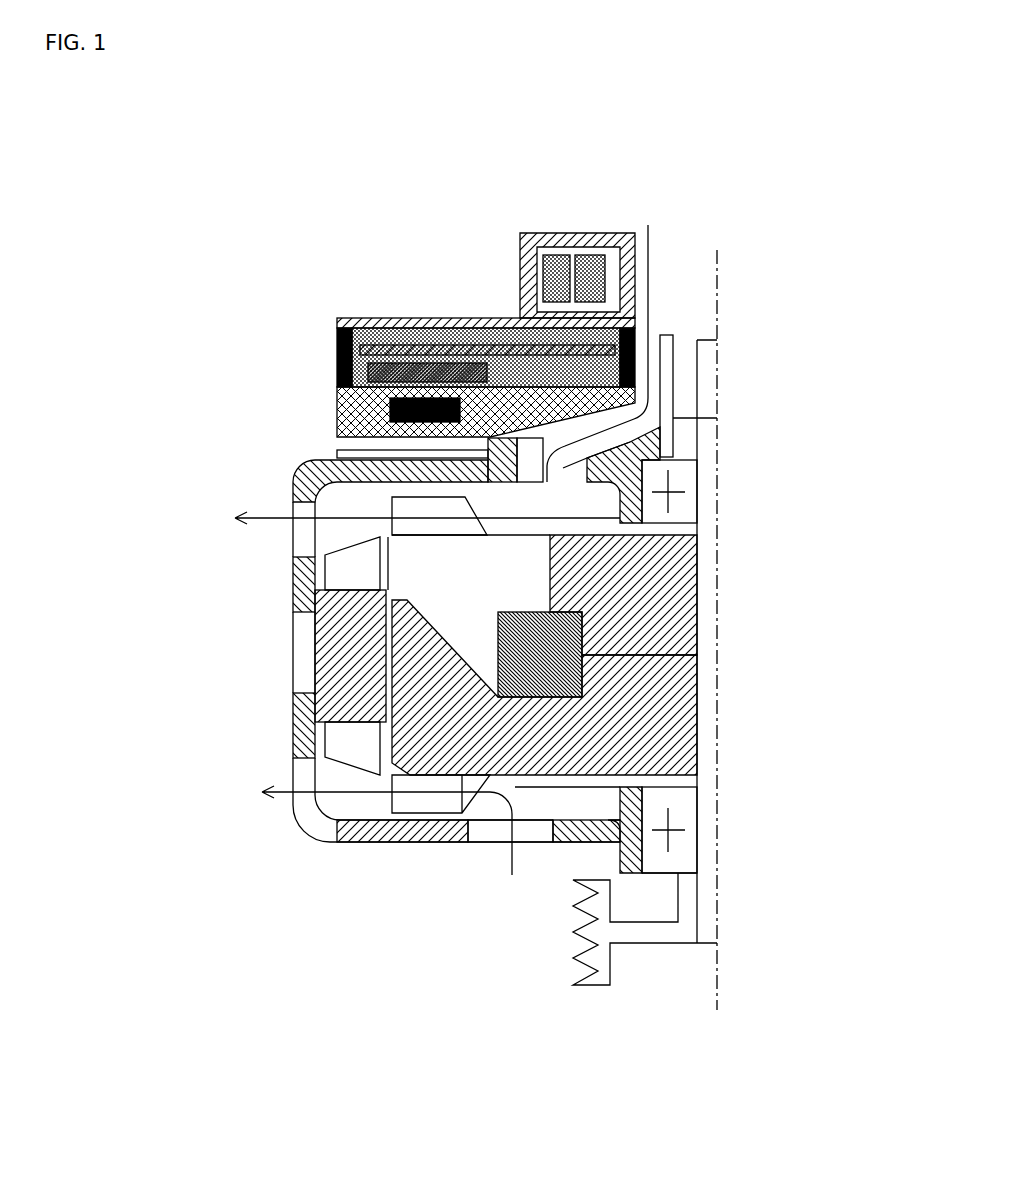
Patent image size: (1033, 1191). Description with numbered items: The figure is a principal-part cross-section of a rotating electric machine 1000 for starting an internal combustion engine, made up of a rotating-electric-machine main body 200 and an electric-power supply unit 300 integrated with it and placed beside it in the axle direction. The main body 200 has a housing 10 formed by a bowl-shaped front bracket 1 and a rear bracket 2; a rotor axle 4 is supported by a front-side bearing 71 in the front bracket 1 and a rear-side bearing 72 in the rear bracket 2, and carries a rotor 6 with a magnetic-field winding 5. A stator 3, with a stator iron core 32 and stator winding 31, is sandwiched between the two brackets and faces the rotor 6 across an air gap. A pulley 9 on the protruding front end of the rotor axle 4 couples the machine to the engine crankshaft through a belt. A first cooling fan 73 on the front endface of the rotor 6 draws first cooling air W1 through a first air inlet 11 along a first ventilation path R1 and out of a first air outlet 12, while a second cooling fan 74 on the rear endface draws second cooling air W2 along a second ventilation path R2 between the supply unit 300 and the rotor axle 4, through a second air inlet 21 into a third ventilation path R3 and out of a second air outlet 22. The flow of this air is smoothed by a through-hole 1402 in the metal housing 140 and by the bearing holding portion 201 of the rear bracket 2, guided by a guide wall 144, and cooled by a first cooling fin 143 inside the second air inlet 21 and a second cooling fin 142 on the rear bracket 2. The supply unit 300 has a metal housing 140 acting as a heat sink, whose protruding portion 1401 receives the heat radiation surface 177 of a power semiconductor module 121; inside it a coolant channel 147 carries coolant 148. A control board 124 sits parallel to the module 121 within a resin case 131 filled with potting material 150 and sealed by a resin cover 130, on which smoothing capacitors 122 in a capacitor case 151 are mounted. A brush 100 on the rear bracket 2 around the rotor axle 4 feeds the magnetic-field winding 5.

The rotating electric machine 1000 is at (307, 125).
The electric-power supply unit 300 is at (242, 337).
The rotating-electric-machine main body 200 is at (222, 643).
The protruding portion 1401 is at (345, 372).
The resin case 131 is at (338, 350).
The potting material 150 is at (385, 322).
The control board 124 is at (420, 345).
The power semiconductor module 121 is at (484, 352).
The heat radiation surface 177 is at (395, 372).
The through-hole 1402 is at (495, 325).
The resin cover 130 is at (496, 320).
The smoothing capacitors 122 is at (558, 268).
The capacitor case 151 is at (598, 238).
The second cooling air W2 is at (607, 342).
The metal housing 140 is at (340, 390).
The coolant channel 147 is at (388, 402).
The coolant 148 is at (392, 417).
The guide wall 144 is at (486, 443).
The second cooling fin 142 is at (338, 455).
The first cooling fin 143 is at (547, 482).
The brush 100 is at (668, 356).
The second ventilation path R2 is at (688, 398).
The bearing holding portion 201 is at (652, 438).
The second air inlet 21 is at (655, 455).
The rear bracket 2 is at (660, 452).
The rear-side bearing 72 is at (697, 508).
The rotor 6 is at (655, 588).
The magnetic-field winding 5 is at (553, 657).
The rotor axle 4 is at (690, 705).
The front-side bearing 71 is at (690, 795).
The pulley 9 is at (660, 935).
The first air inlet 11 is at (548, 850).
The first cooling air W1 is at (512, 896).
The first cooling fan 73 is at (452, 832).
The front bracket 1 is at (420, 838).
The first ventilation path R1 is at (372, 840).
The housing 10 is at (345, 857).
The first air outlet 12 is at (298, 818).
The third ventilation path R3 is at (350, 503).
The second cooling fan 74 is at (400, 532).
The second air outlet 22 is at (300, 575).
The stator 3 is at (190, 685).
The stator iron core 32 is at (340, 643).
The stator winding 31 is at (300, 732).